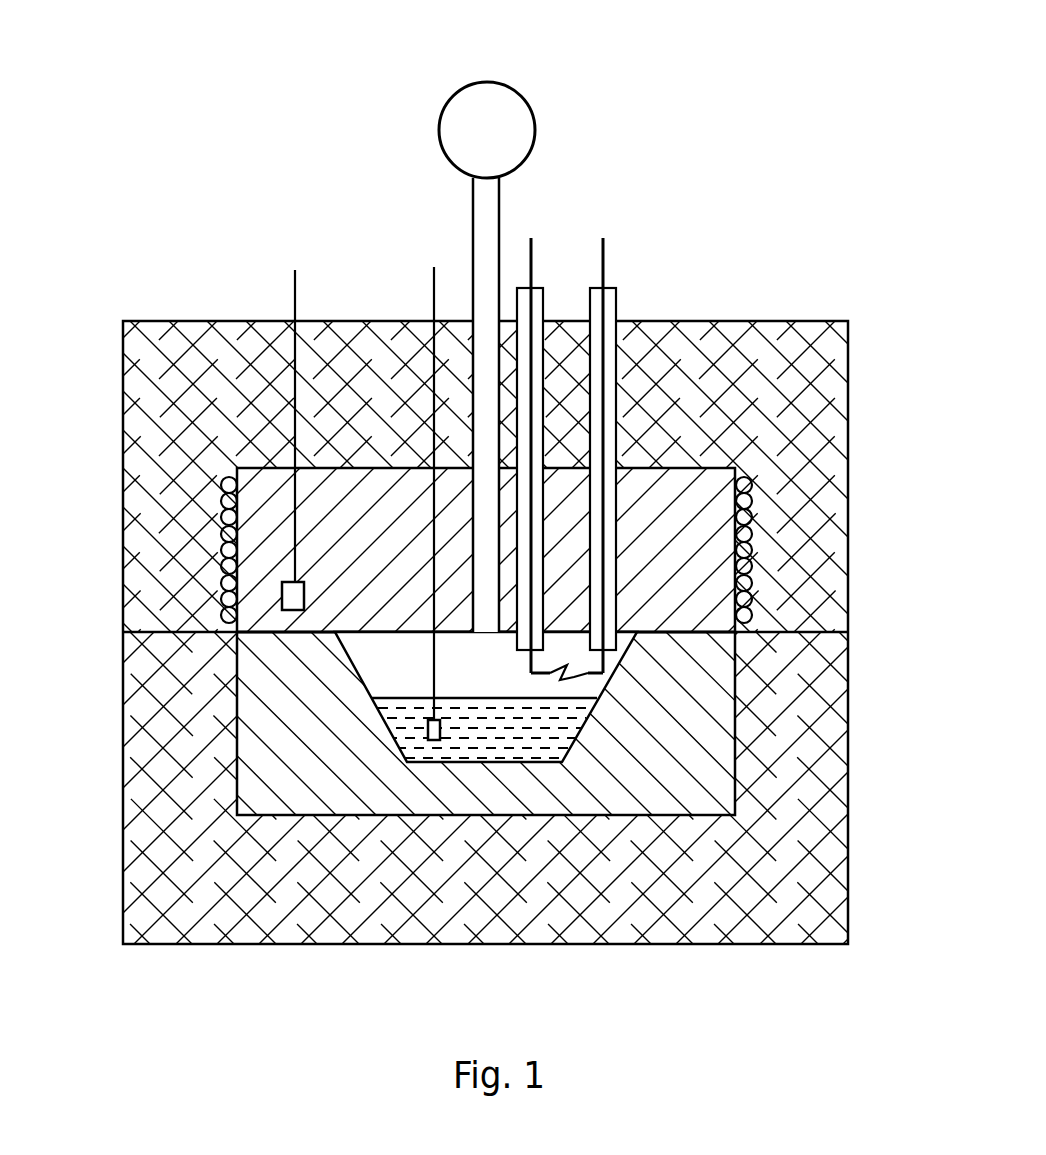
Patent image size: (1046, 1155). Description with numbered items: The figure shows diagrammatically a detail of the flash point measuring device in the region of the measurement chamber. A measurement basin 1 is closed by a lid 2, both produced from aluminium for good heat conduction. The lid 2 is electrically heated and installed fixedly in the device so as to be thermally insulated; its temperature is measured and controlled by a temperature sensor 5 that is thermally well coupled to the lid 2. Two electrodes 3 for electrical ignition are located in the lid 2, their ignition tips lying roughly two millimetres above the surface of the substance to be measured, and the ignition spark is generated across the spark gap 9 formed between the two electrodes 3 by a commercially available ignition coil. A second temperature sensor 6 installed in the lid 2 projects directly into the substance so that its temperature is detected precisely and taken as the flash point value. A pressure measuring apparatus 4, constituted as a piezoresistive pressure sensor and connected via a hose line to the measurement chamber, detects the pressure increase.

The measurement basin 1 is at (660, 729).
The lid 2 is at (663, 543).
The electrodes 3 is at (532, 258).
The pressure measuring apparatus 4 is at (458, 86).
The temperature sensor 5 is at (292, 578).
The second temperature sensor 6 is at (432, 718).
The spark gap 9 is at (561, 681).